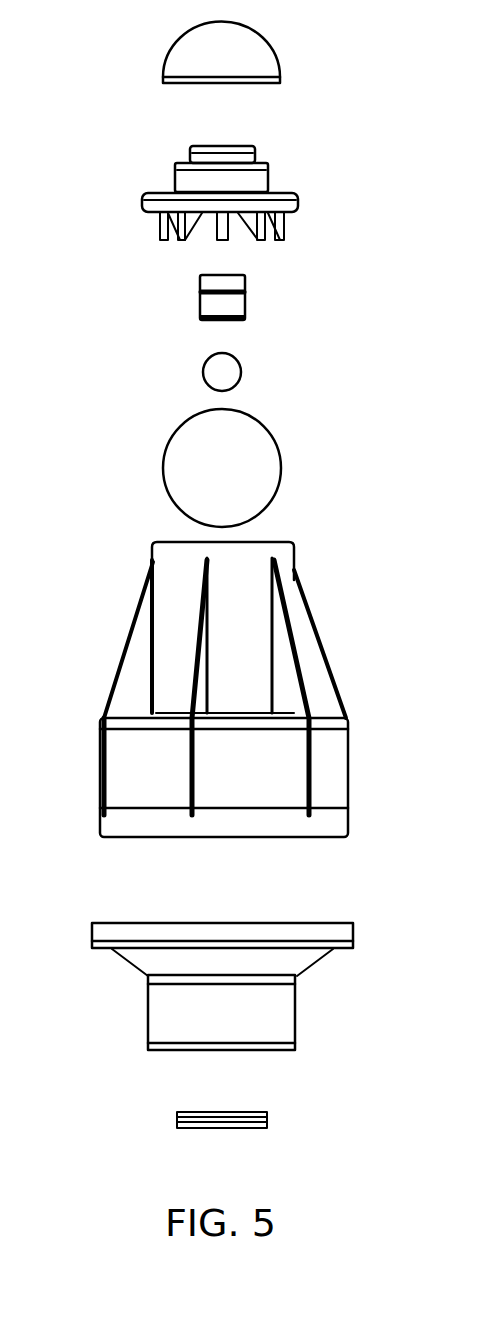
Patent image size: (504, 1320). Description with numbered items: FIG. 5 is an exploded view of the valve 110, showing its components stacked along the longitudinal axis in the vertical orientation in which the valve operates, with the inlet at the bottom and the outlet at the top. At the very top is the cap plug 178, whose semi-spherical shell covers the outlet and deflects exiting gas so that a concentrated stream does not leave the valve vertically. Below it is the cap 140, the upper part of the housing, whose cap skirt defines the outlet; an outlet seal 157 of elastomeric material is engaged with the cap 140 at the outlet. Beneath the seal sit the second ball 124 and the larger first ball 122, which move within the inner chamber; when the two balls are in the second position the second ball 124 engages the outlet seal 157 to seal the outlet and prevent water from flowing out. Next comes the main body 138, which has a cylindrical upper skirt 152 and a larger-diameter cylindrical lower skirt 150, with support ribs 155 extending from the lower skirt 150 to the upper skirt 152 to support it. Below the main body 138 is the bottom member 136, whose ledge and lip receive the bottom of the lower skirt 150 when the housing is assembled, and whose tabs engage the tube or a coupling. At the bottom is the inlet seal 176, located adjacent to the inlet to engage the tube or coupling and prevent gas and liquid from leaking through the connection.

The valve 110 is at (106, 33).
The cap plug 178 is at (274, 52).
The cap 140 is at (178, 181).
The outlet seal 157 is at (200, 302).
The second ball 124 is at (203, 363).
The first ball 122 is at (178, 432).
The main body 138 is at (181, 689).
The upper skirt 152 is at (168, 586).
The support ribs 155 is at (130, 618).
The lower skirt 150 is at (125, 762).
The bottom member 136 is at (148, 1003).
The inlet seal 176 is at (253, 1128).